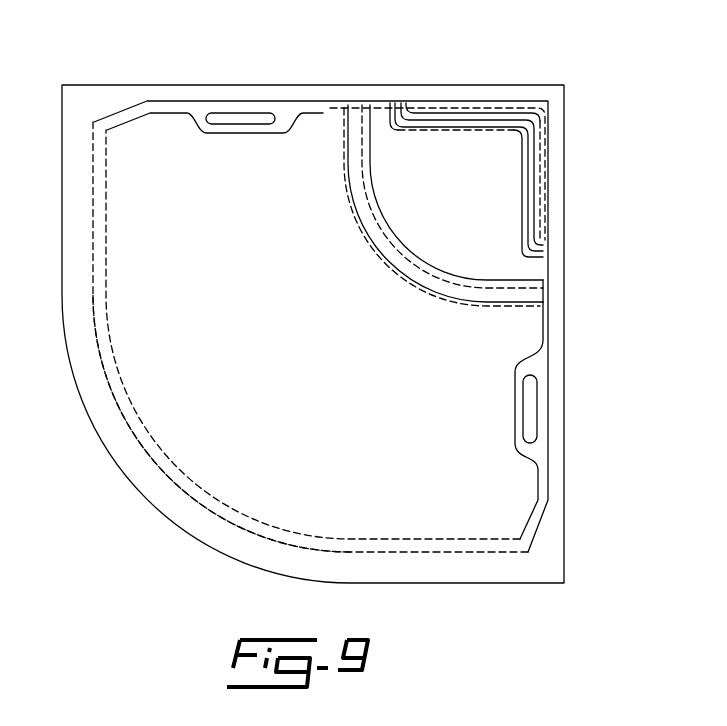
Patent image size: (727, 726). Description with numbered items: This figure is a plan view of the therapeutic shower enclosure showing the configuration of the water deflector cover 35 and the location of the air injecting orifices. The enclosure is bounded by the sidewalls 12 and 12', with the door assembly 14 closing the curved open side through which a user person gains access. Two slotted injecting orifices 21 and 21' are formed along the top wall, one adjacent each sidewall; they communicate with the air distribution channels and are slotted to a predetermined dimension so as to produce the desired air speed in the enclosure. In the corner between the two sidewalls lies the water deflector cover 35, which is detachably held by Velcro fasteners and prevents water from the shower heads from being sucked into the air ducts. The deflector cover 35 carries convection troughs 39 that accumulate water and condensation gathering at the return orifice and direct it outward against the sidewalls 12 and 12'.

The sidewall 12 is at (320, 326).
The sidewall 12' is at (590, 420).
The door assembly 14 is at (172, 475).
The slotted injecting orifice 21 is at (211, 177).
The slotted injecting orifice 21' is at (592, 412).
The water deflector cover 35 is at (461, 152).
The convection troughs 39 is at (377, 120).